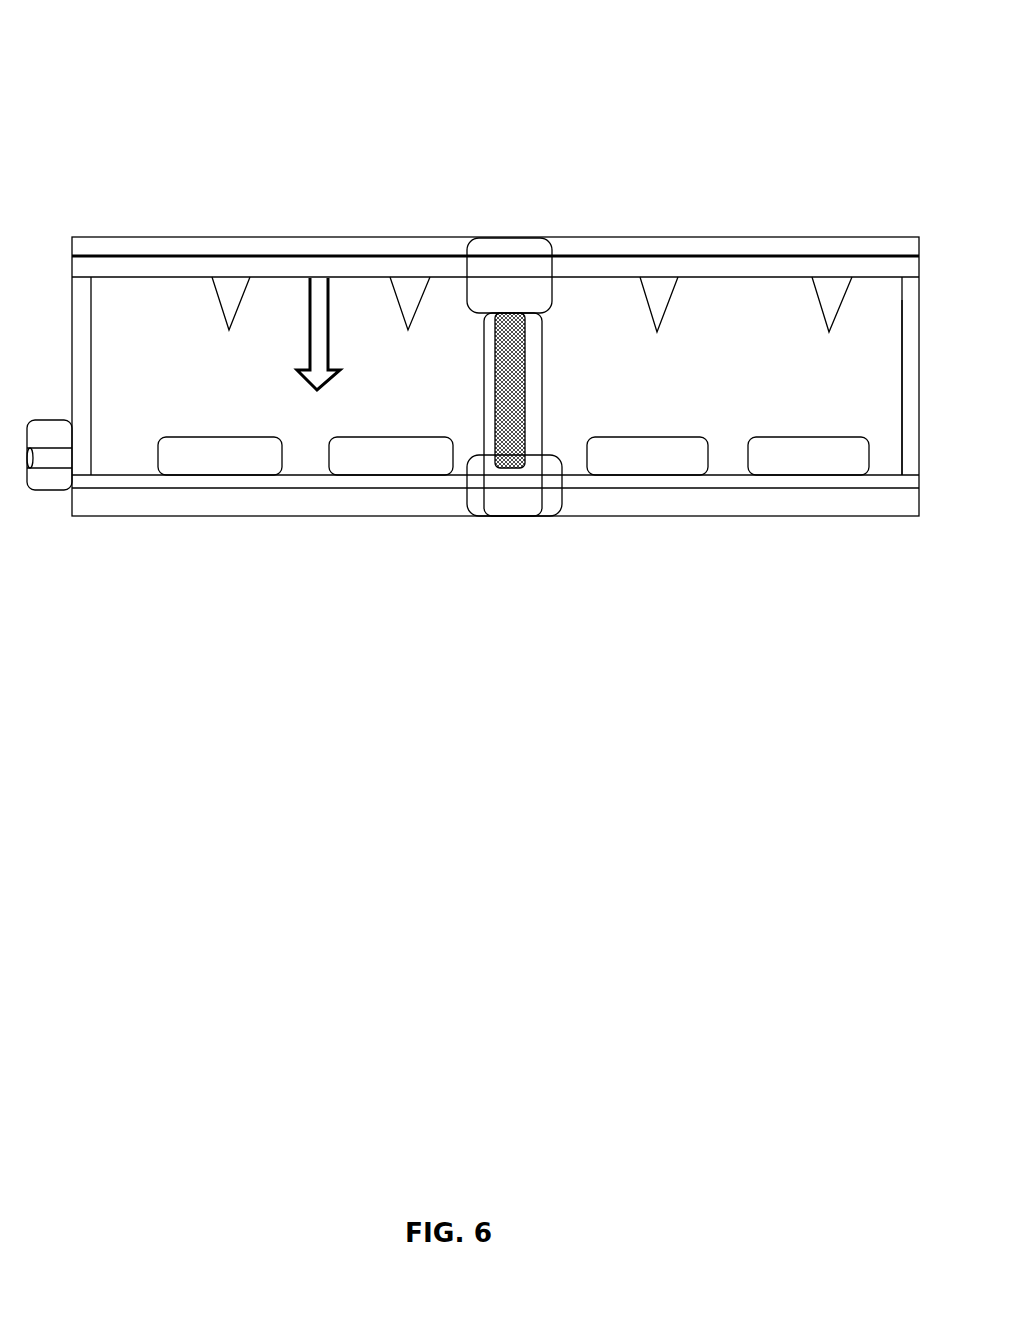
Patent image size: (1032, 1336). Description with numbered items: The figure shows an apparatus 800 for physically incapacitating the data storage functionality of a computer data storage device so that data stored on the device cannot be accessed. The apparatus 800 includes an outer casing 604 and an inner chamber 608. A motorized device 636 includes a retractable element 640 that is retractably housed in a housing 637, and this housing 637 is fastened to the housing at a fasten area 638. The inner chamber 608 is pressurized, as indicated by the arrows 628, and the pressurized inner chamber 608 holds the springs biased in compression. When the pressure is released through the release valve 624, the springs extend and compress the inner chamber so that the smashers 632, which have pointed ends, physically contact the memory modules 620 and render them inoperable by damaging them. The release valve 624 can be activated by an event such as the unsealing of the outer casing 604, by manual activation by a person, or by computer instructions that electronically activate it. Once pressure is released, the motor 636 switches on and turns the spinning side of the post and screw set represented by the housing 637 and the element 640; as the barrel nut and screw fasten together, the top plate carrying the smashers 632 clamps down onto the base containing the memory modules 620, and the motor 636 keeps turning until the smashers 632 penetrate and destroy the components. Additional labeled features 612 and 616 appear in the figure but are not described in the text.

The apparatus 800 is at (124, 157).
The outer casing 604 is at (193, 254).
The inner chamber 608 is at (622, 275).
The chamber 612 is at (780, 363).
The side wall 616 is at (868, 333).
The memory modules 620 is at (257, 456).
The release valve 624 is at (48, 492).
The arrows 628 is at (318, 332).
The smashers 632 is at (233, 290).
The motorized device 636 is at (542, 237).
The housing 637 is at (497, 505).
The fasten area 638 is at (512, 520).
The retractable element 640 is at (511, 312).